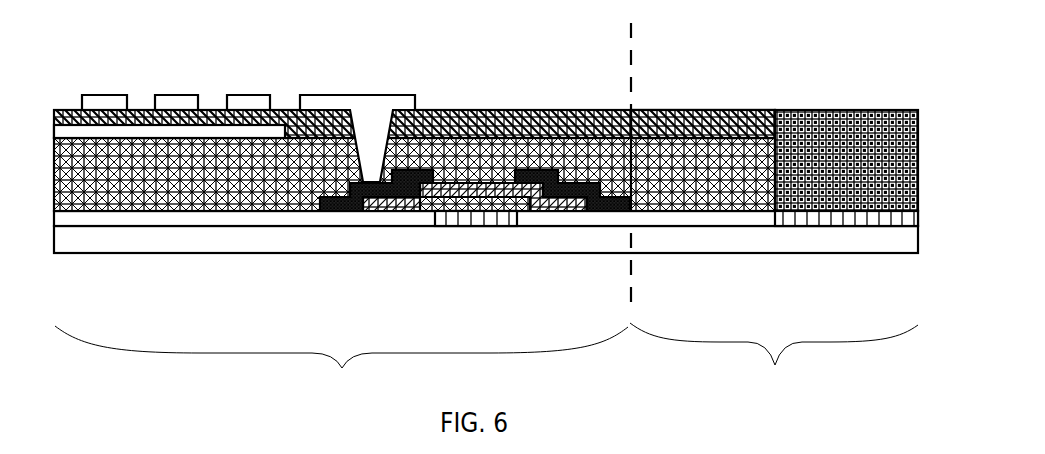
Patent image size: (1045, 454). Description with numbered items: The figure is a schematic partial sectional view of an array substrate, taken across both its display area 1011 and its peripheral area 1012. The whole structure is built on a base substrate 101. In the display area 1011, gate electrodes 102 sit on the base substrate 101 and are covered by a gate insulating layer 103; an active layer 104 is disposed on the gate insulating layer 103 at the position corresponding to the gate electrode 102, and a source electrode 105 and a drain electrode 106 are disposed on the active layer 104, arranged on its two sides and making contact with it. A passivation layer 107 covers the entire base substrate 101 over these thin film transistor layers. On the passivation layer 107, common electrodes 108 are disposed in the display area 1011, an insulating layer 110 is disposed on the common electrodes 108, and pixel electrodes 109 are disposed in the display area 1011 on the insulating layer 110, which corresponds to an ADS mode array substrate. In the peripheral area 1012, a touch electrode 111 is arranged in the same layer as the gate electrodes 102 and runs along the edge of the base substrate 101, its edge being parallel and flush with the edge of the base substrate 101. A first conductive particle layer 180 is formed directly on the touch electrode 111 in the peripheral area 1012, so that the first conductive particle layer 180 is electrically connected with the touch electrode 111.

The base substrate 101 is at (157, 240).
The gate electrode 102 is at (462, 218).
The gate insulating layer 103 is at (257, 218).
The active layer 104 is at (480, 138).
The source electrode 105 is at (598, 212).
The drain electrode 106 is at (350, 208).
The passivation layer 107 is at (728, 152).
The common electrode 108 is at (223, 132).
The pixel electrode 109 is at (362, 115).
The insulating layer 110 is at (585, 120).
The touch electrode 111 is at (818, 222).
The first conductive particle layer 180 is at (872, 130).
The display area 1011 is at (341, 361).
The peripheral area 1012 is at (774, 360).